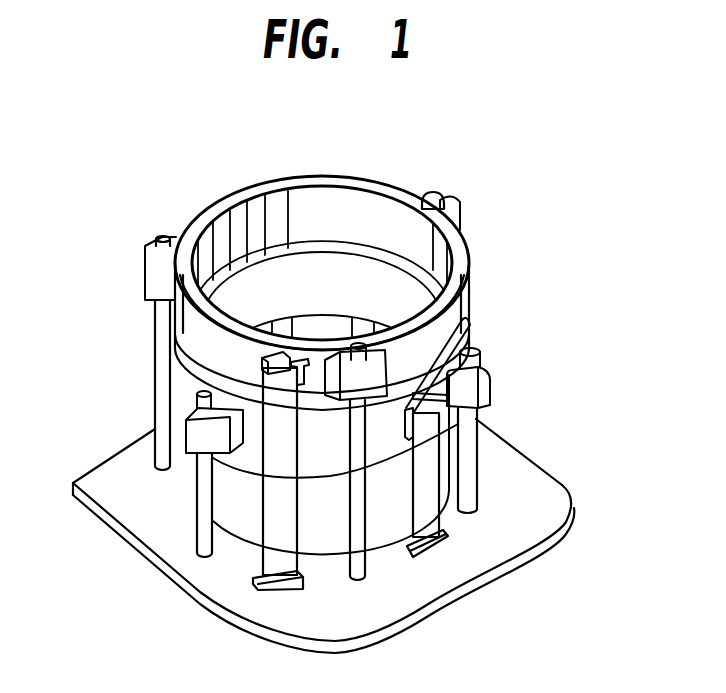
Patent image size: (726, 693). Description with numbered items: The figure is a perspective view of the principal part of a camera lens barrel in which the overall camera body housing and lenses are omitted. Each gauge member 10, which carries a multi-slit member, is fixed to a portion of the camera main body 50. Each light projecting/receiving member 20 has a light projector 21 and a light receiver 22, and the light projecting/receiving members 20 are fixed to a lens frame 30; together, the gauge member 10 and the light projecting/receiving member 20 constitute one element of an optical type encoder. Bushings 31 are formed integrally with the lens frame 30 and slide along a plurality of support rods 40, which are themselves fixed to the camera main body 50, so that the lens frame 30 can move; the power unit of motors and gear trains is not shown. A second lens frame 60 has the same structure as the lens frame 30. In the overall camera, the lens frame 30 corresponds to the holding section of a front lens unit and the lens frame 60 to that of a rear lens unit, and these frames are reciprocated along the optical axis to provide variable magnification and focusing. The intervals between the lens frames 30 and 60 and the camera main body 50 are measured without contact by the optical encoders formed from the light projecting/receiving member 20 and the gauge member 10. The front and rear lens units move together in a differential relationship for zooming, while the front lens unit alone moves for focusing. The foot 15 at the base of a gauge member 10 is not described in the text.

The gauge member 10 is at (273, 532).
The foot of support bar 15 is at (260, 585).
The light projecting/receiving member 20 is at (259, 135).
The light projector 21 is at (272, 352).
The light receiver 22 is at (300, 358).
The lens frame 30 is at (302, 207).
The bushing 31 is at (150, 244).
The support rod 40 is at (436, 194).
The camera main body 50 is at (525, 462).
The lens frame 60 is at (455, 334).